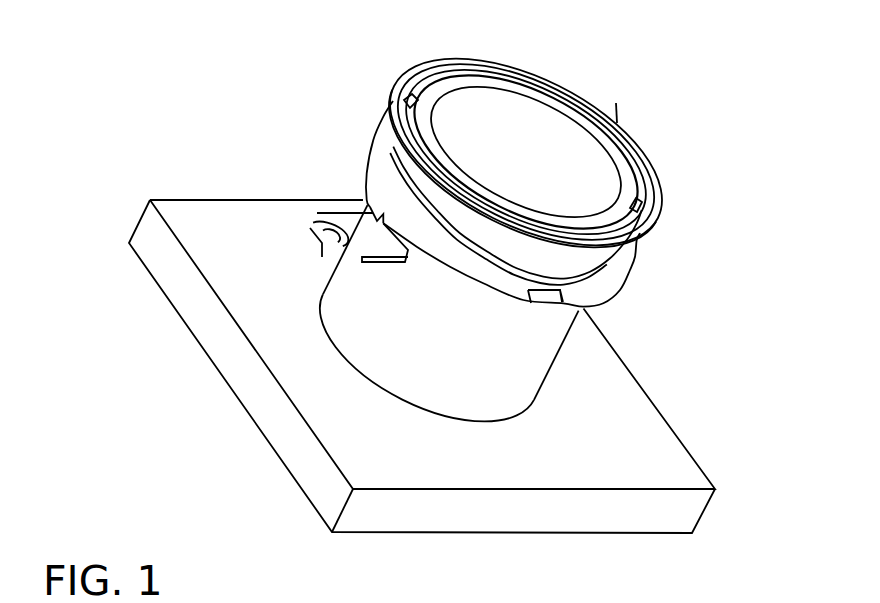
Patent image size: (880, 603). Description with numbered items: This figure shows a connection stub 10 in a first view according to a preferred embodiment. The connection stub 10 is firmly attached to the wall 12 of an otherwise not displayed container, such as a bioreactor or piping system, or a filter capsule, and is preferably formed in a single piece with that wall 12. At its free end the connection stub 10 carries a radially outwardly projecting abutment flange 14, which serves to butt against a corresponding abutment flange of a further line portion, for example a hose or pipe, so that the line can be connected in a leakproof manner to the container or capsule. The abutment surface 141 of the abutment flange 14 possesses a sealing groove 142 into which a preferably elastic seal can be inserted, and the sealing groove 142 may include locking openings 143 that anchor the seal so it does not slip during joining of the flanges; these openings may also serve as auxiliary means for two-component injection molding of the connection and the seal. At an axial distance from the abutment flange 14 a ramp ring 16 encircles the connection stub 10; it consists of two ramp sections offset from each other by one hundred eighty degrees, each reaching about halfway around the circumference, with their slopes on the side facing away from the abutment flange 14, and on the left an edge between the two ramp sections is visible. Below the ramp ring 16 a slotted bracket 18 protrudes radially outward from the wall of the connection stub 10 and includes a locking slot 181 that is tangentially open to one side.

The connection stub 10 is at (318, 92).
The wall 12 is at (310, 380).
The abutment flange 14 is at (545, 78).
The ramp ring 16 is at (365, 178).
The slotted bracket 18 is at (316, 223).
The abutment surface 141 is at (617, 120).
The sealing groove 142 is at (638, 204).
The locking openings 143 is at (410, 110).
The locking slot 181 is at (345, 240).